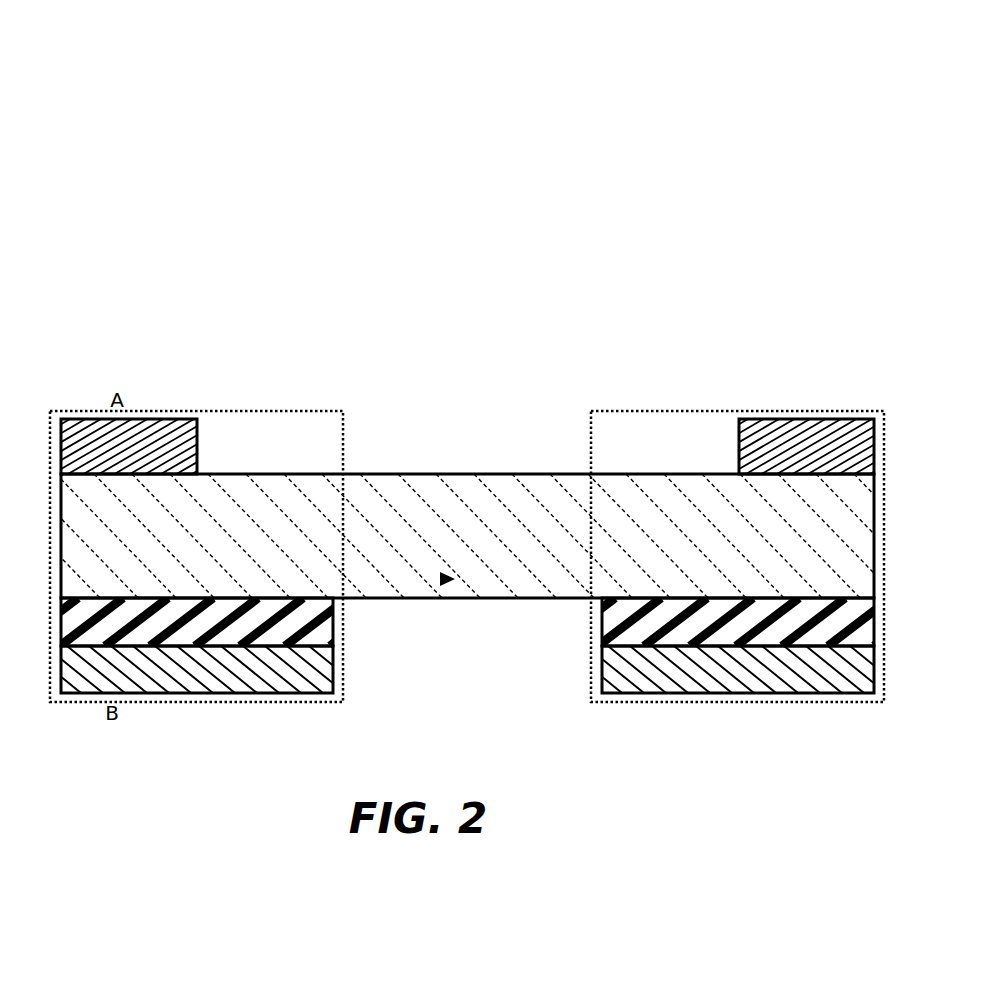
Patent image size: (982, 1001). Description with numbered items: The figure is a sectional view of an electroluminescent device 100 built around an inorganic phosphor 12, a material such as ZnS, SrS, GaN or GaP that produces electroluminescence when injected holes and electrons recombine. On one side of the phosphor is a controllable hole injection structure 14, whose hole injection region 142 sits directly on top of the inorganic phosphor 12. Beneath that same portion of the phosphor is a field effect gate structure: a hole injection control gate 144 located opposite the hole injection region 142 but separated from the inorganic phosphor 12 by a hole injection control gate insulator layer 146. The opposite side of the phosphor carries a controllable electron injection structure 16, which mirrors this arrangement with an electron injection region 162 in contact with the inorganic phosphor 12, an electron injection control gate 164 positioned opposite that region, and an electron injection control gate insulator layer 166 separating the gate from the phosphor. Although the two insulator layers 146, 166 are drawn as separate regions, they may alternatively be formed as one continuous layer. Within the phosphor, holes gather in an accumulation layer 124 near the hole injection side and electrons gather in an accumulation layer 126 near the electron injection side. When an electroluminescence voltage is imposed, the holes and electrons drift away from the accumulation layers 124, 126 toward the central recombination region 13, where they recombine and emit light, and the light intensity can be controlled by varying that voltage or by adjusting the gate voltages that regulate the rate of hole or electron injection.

The electroluminescent device 100 is at (112, 103).
The inorganic phosphor 12 is at (535, 474).
The recombination region 13 is at (441, 580).
The controllable hole injection structure 14 is at (273, 411).
The controllable electron injection structure 16 is at (680, 411).
The accumulation layer 124 is at (343, 579).
The accumulation layer 126 is at (592, 581).
The hole injection region 142 is at (185, 419).
The hole injection control gate 144 is at (320, 693).
The hole injection control gate insulator layer 146 is at (333, 637).
The electron injection region 162 is at (817, 419).
The electron injection control gate 164 is at (750, 693).
The electron injection control gate insulator layer 166 is at (602, 638).